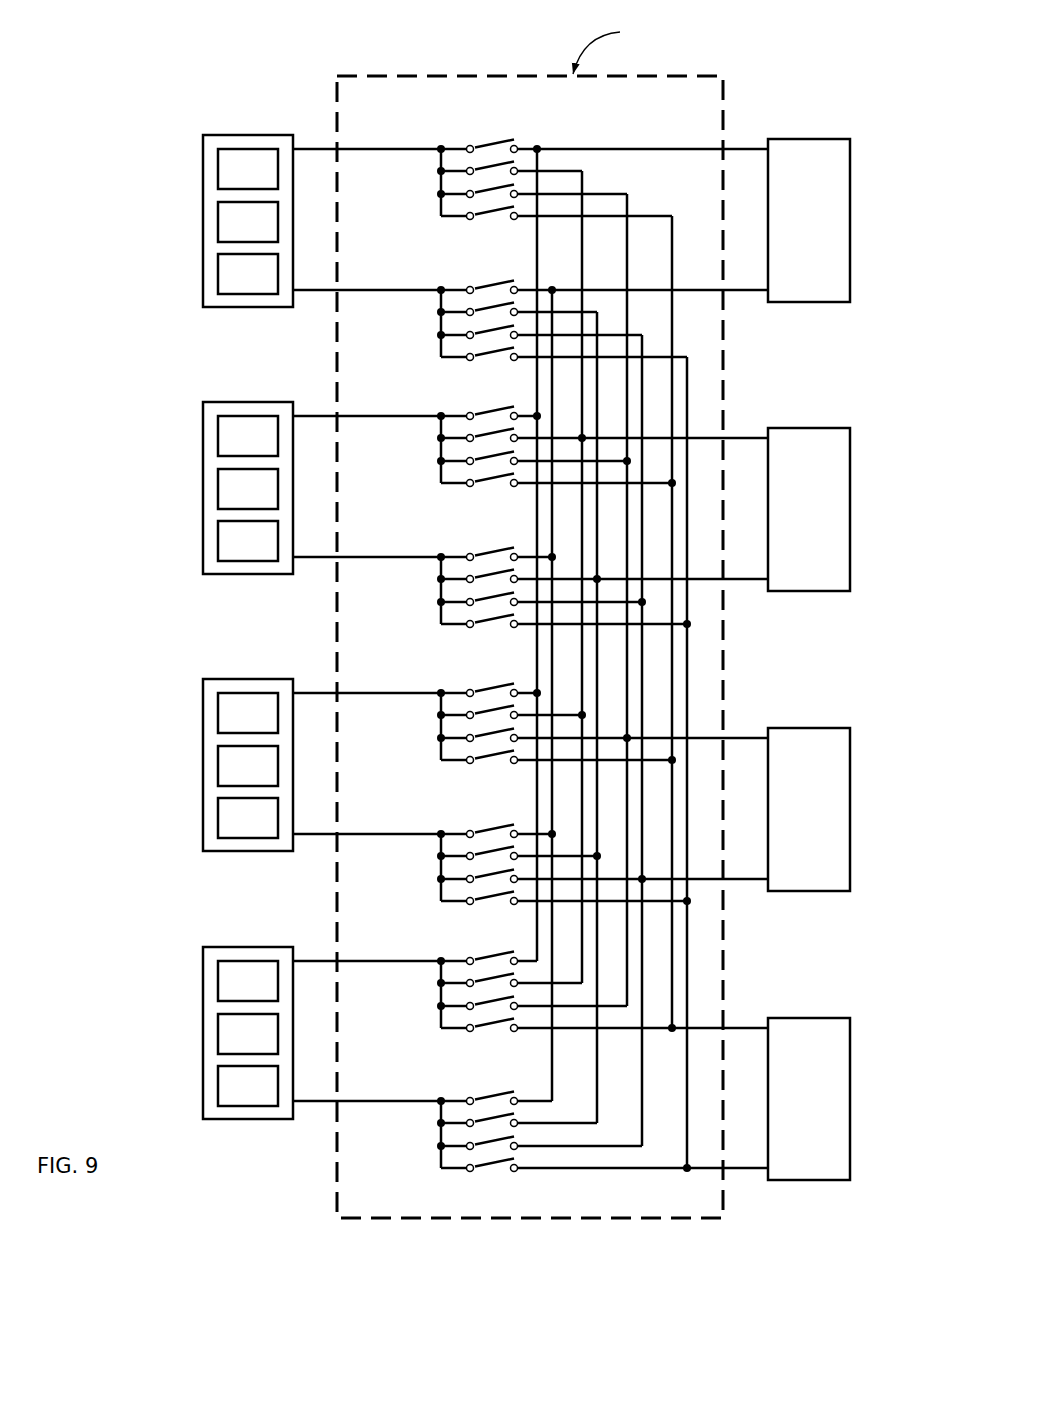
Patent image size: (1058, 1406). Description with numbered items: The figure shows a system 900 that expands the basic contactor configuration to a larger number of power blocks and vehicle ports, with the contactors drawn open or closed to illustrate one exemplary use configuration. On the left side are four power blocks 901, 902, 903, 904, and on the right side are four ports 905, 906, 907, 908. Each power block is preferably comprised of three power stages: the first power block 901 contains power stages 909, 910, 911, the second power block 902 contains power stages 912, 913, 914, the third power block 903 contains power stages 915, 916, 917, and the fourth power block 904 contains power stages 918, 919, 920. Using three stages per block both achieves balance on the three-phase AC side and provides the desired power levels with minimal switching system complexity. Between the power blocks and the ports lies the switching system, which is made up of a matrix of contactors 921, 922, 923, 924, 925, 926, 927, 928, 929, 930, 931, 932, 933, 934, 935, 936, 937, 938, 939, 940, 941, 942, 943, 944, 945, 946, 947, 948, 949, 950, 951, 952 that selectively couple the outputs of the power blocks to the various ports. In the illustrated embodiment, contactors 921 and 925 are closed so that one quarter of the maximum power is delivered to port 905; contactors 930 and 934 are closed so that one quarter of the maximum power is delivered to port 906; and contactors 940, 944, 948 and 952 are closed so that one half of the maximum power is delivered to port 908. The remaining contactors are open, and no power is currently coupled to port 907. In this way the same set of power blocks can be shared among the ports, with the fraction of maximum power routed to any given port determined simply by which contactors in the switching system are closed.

The system 900 is at (795, 1222).
The power block 901 is at (223, 194).
The power block 902 is at (223, 461).
The power block 903 is at (223, 738).
The power block 904 is at (223, 1006).
The port 905 is at (851, 203).
The port 906 is at (851, 492).
The port 907 is at (851, 792).
The port 908 is at (851, 1082).
The power stage 909 is at (229, 182).
The power stage 910 is at (229, 235).
The power stage 911 is at (229, 287).
The power stage 912 is at (229, 449).
The power stage 913 is at (229, 502).
The power stage 914 is at (229, 554).
The power stage 915 is at (229, 726).
The power stage 916 is at (229, 779).
The power stage 917 is at (229, 831).
The power stage 918 is at (229, 994).
The power stage 919 is at (229, 1047).
The power stage 920 is at (229, 1099).
The contactor 921 is at (493, 143).
The contactor 922 is at (493, 165).
The contactor 923 is at (493, 188).
The contactor 924 is at (493, 210).
The contactor 925 is at (493, 284).
The contactor 926 is at (493, 306).
The contactor 927 is at (493, 329).
The contactor 928 is at (493, 351).
The contactor 929 is at (493, 410).
The contactor 930 is at (493, 432).
The contactor 931 is at (493, 455).
The contactor 932 is at (493, 477).
The contactor 933 is at (493, 551).
The contactor 934 is at (493, 573).
The contactor 935 is at (493, 596).
The contactor 936 is at (493, 618).
The contactor 937 is at (493, 687).
The contactor 938 is at (493, 709).
The contactor 939 is at (493, 732).
The contactor 940 is at (493, 754).
The contactor 941 is at (493, 828).
The contactor 942 is at (493, 850).
The contactor 943 is at (493, 873).
The contactor 944 is at (493, 895).
The contactor 945 is at (493, 955).
The contactor 946 is at (493, 977).
The contactor 947 is at (493, 1000).
The contactor 948 is at (493, 1022).
The contactor 949 is at (493, 1095).
The contactor 950 is at (493, 1117).
The contactor 951 is at (493, 1140).
The contactor 952 is at (493, 1162).